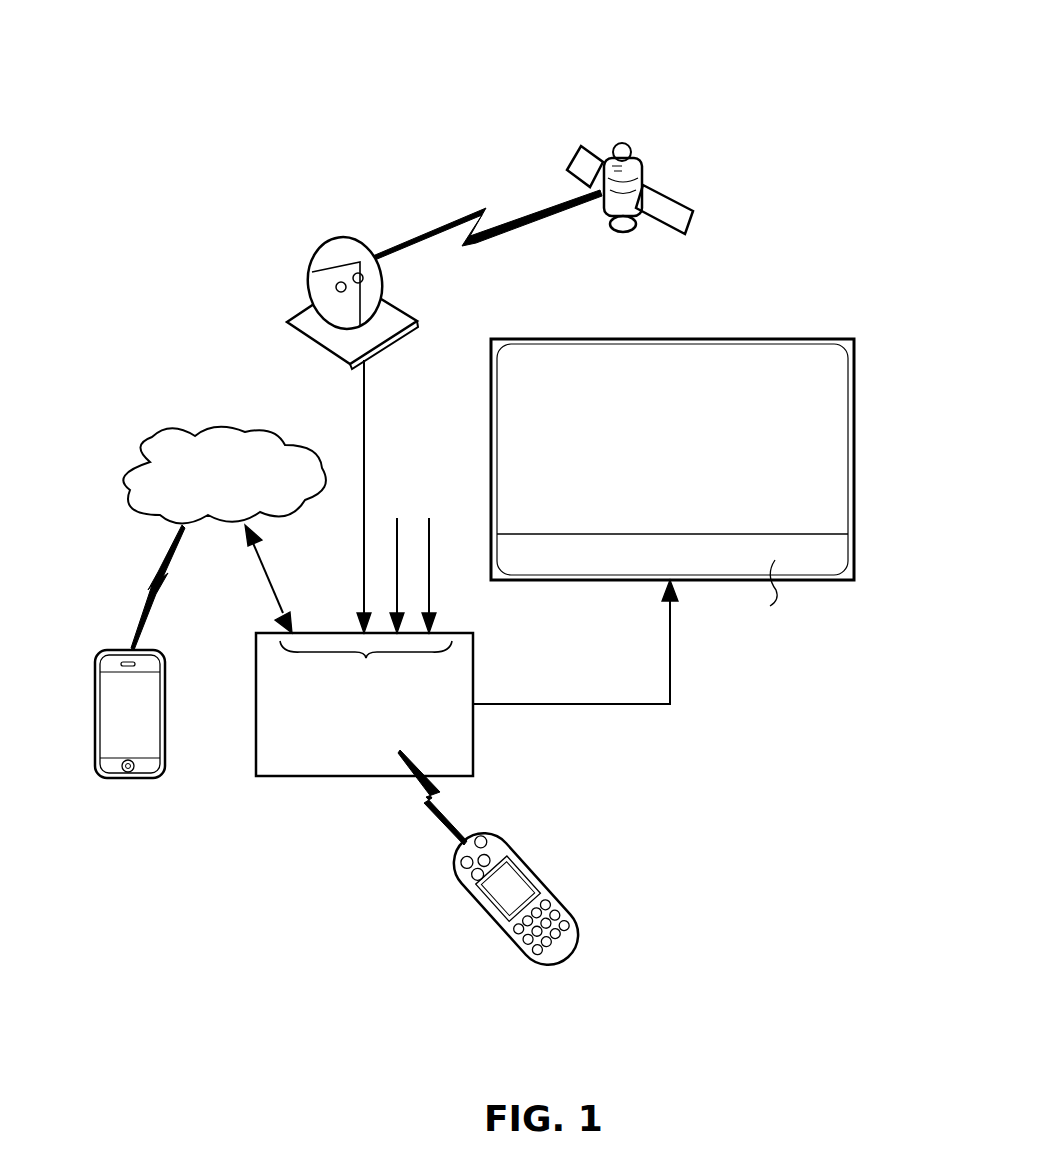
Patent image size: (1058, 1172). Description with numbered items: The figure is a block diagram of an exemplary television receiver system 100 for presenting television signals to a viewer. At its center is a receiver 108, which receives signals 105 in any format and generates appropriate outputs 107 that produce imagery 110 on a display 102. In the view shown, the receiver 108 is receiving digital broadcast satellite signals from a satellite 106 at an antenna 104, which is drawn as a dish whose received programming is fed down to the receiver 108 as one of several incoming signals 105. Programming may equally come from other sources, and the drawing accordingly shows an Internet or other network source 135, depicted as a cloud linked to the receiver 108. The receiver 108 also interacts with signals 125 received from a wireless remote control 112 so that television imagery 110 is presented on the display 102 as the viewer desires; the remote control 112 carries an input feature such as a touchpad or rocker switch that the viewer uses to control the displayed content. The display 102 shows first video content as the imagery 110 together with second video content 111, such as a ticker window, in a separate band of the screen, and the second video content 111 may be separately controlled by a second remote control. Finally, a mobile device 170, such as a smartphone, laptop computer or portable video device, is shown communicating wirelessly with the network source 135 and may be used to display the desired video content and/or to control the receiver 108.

The system 100 is at (745, 66).
The display 102 is at (675, 438).
The antenna 104 is at (367, 338).
The signals 105 is at (370, 526).
The satellite 106 is at (636, 170).
The outputs 107 is at (672, 663).
The receiver 108 is at (364, 704).
The imagery 110 is at (533, 370).
The second video content 111 is at (672, 570).
The wireless remote control 112 is at (534, 907).
The signals 125 is at (438, 803).
The network source 135 is at (224, 475).
The mobile device 170 is at (130, 714).